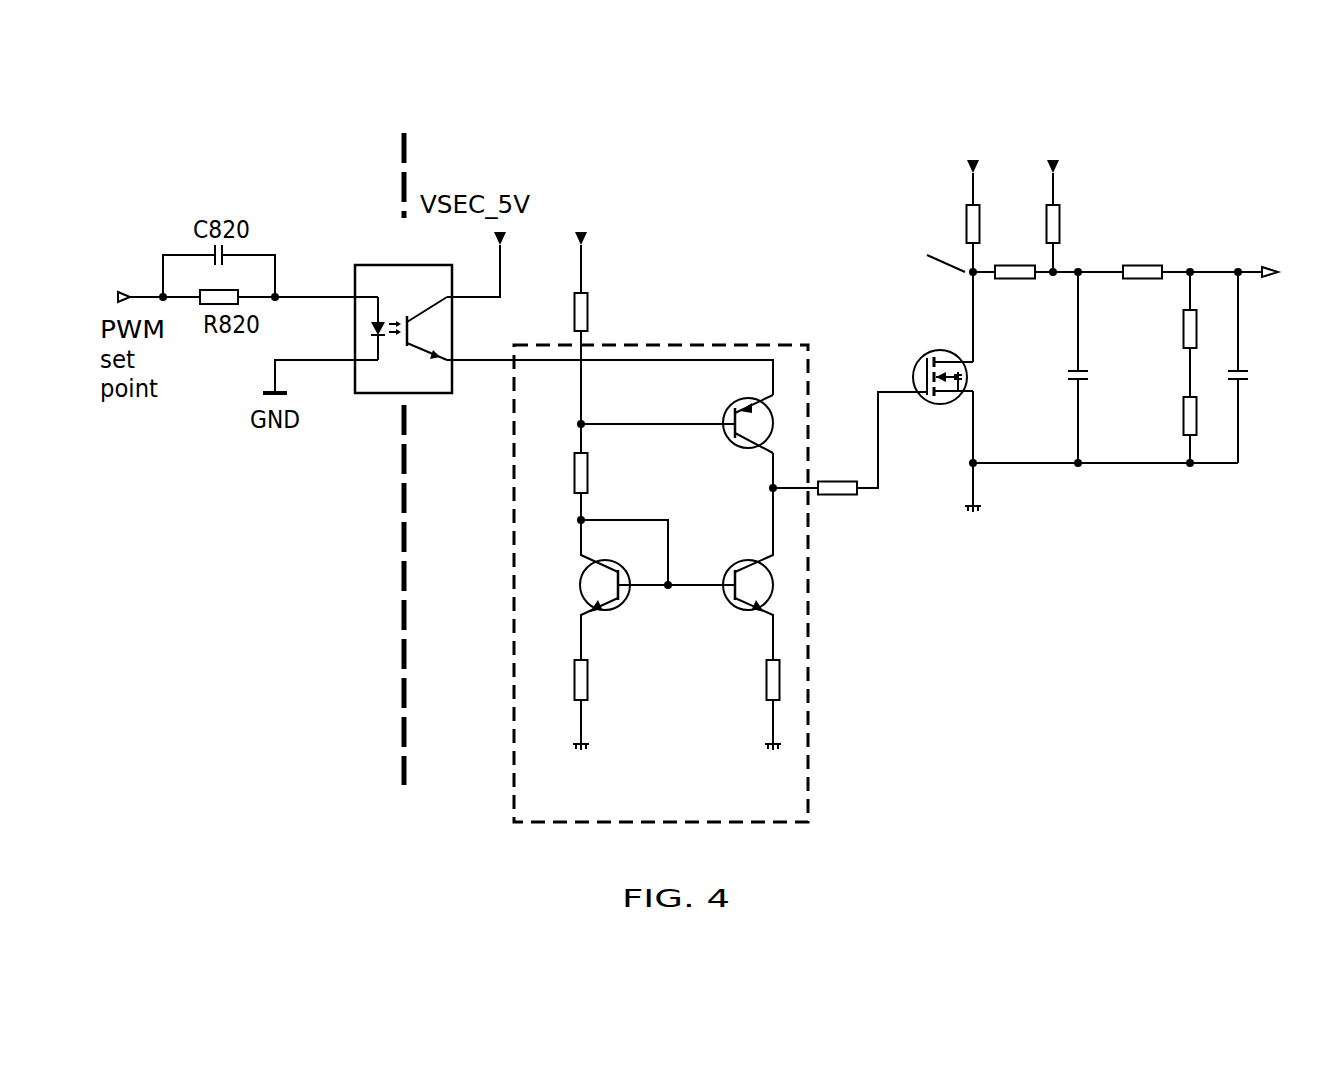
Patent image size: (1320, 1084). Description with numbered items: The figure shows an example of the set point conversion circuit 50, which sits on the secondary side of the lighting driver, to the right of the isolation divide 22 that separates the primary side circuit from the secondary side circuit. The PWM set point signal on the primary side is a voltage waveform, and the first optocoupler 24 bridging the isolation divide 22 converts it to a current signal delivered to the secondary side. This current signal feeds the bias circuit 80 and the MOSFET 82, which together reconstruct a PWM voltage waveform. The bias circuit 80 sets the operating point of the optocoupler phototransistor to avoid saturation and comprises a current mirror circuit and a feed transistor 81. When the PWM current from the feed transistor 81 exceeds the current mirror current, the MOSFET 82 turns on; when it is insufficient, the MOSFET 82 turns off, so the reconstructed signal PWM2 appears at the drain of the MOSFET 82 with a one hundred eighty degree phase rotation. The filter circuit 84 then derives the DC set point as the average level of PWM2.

The isolation divide 22 is at (404, 666).
The first optocoupler 24 is at (368, 265).
The set point conversion circuit 50 is at (786, 222).
The bias circuit 80 is at (692, 543).
The feed transistor 81 is at (730, 405).
The MOSFET 82 is at (928, 356).
The filter circuit 84 is at (1121, 493).